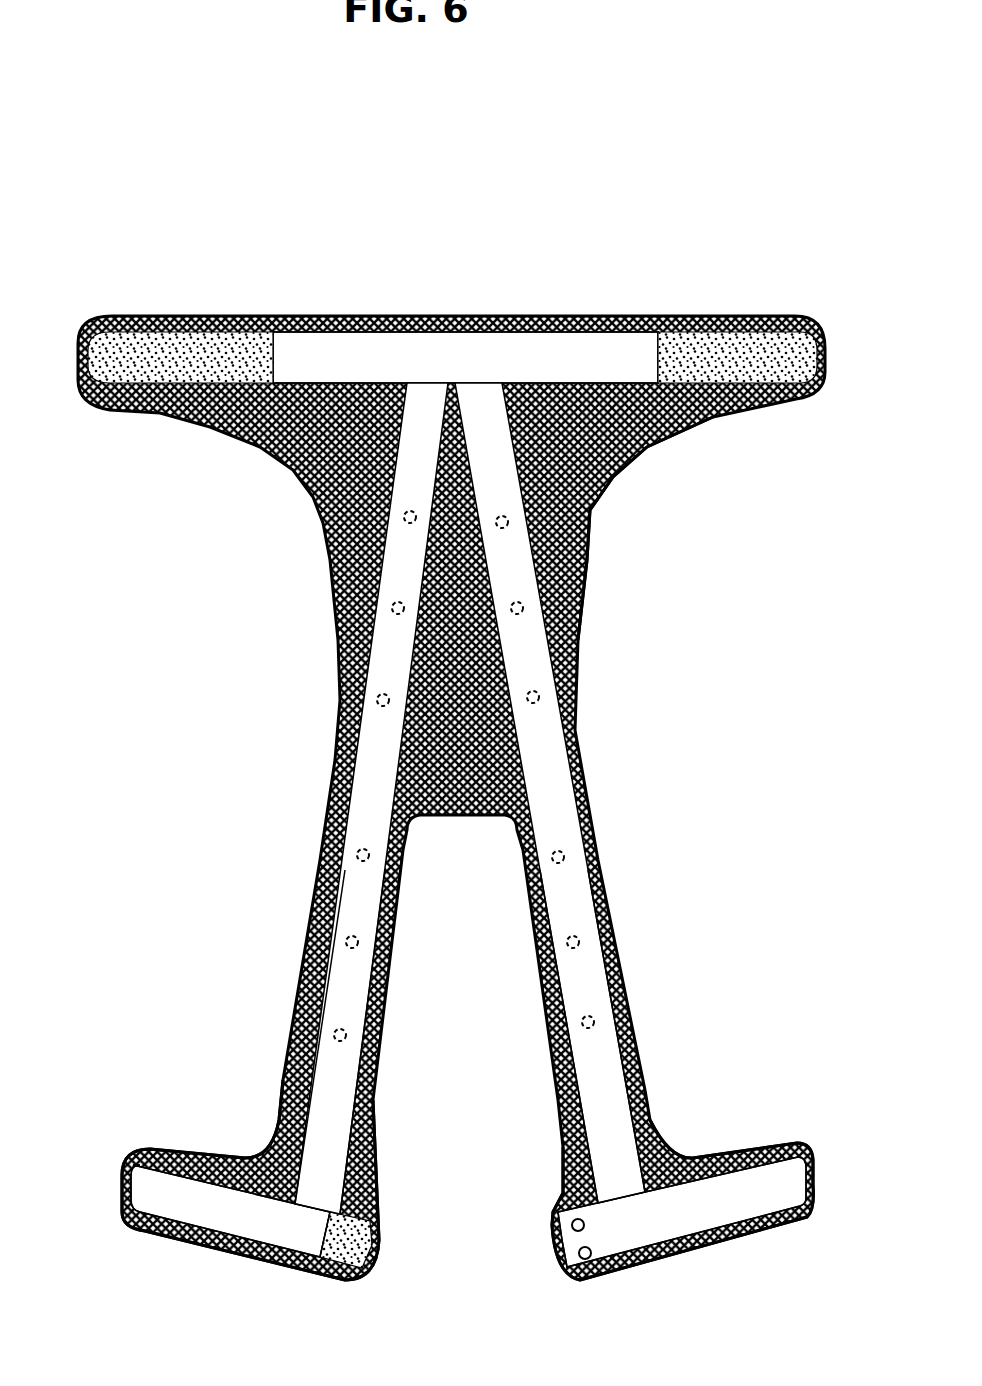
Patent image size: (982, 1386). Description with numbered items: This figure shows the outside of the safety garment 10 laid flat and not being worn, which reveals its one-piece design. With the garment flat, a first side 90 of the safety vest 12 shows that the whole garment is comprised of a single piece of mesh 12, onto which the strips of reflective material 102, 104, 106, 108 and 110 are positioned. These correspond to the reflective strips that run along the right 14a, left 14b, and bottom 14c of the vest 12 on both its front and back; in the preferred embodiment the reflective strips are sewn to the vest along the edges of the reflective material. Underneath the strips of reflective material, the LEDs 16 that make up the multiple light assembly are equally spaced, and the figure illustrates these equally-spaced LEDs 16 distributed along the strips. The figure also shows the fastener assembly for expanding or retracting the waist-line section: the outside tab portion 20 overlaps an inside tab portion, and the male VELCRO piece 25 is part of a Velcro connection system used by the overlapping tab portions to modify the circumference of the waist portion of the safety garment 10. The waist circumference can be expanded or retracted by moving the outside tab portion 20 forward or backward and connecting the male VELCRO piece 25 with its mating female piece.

The safety garment 10 is at (461, 799).
The vest 12 is at (451, 798).
The right reflective strip 14a is at (556, 793).
The left reflective strip 14b is at (347, 798).
The bottom reflective strip 14c is at (468, 799).
The LEDs 16 is at (494, 885).
The outside tab portion 20 is at (461, 1180).
The male VELCRO piece 25 is at (452, 769).
The first side 90 is at (645, 528).
The strip of reflective material 102 is at (682, 1182).
The strip of reflective material 104 is at (230, 1176).
The strip of reflective material 106 is at (613, 1036).
The strip of reflective material 108 is at (311, 1029).
The strip of reflective material 110 is at (465, 326).